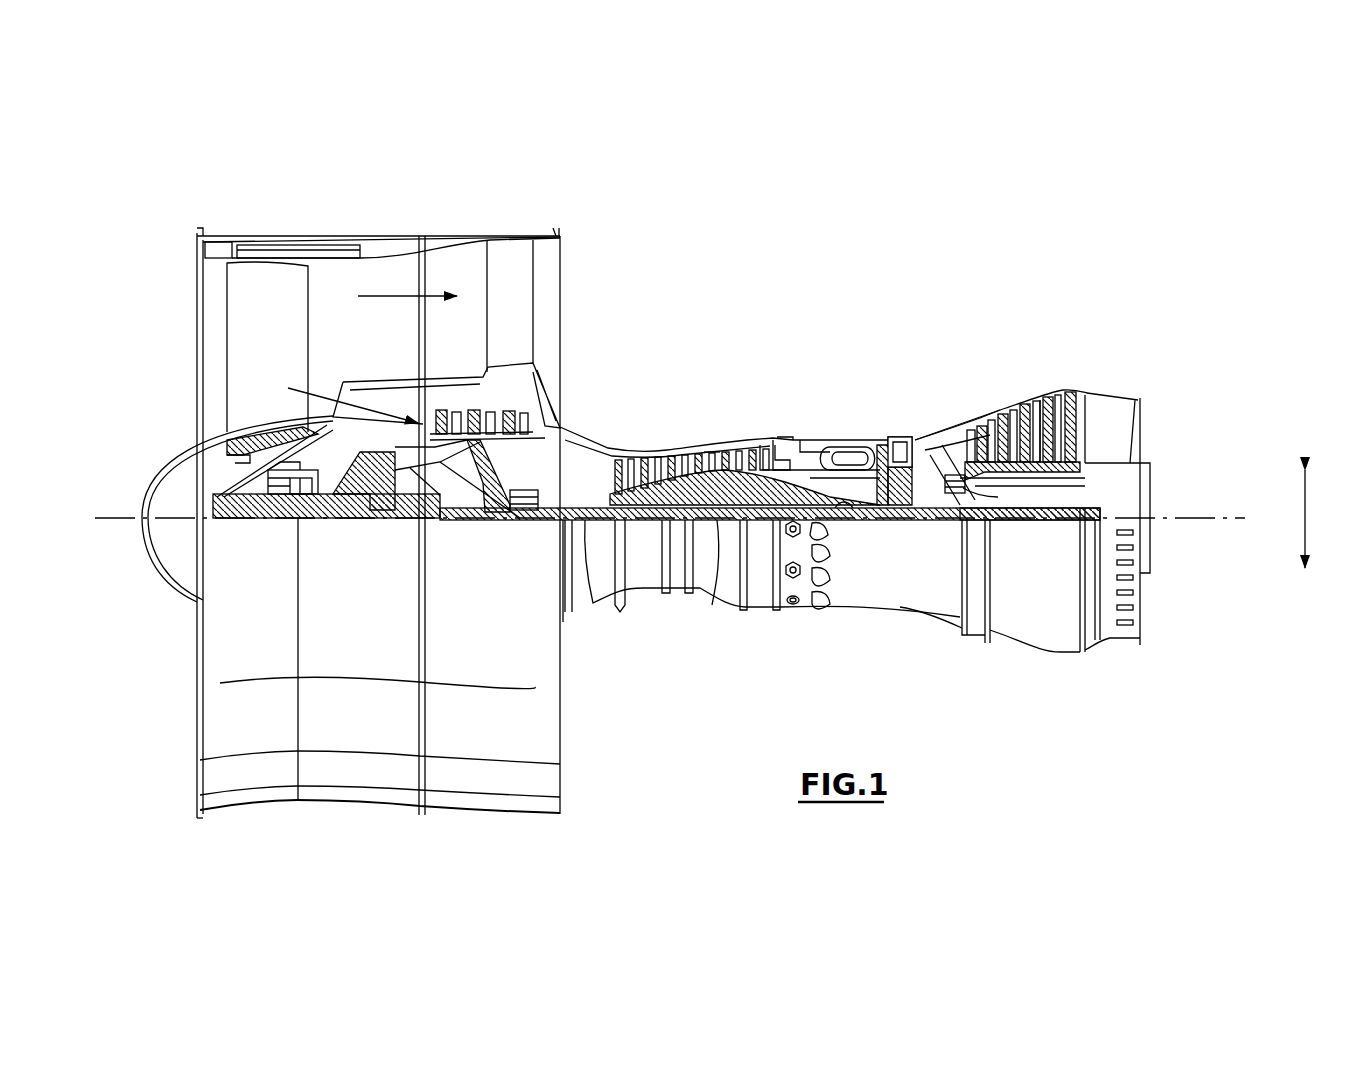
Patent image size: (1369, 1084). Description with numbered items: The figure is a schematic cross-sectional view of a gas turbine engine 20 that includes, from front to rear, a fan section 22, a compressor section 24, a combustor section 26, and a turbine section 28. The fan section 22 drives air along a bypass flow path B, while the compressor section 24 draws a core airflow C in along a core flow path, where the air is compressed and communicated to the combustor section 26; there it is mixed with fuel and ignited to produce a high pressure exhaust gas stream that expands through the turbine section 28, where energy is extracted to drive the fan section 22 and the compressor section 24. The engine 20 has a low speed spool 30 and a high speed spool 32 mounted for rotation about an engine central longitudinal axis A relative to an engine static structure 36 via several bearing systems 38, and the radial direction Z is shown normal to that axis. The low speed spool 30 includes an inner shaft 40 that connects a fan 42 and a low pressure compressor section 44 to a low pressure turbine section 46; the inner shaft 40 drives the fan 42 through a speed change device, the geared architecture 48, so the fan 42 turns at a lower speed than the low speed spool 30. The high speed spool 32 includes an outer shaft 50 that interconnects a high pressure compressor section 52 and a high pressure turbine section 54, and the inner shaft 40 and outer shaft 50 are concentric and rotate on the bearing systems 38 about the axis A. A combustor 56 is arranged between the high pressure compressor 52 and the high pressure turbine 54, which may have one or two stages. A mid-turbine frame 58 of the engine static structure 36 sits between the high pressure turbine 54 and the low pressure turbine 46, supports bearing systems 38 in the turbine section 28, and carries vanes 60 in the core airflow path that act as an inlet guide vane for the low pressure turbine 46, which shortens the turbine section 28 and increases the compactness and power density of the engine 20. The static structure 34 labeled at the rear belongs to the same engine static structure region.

The gas turbine engine 20 is at (843, 285).
The fan section 22 is at (306, 228).
The compressor section 24 is at (607, 430).
The combustor section 26 is at (850, 431).
The turbine section 28 is at (985, 380).
The low speed spool 30 is at (718, 595).
The high speed spool 32 is at (762, 456).
The engine static structure 34 is at (1037, 484).
The engine static structure 36 is at (763, 590).
The bearing systems 38 is at (308, 518).
The inner shaft 40 is at (587, 583).
The fan 42 is at (283, 357).
The low pressure compressor section 44 is at (533, 370).
The low pressure turbine section 46 is at (1025, 408).
The geared architecture 48 is at (385, 500).
The outer shaft 50 is at (843, 507).
The high pressure compressor section 52 is at (708, 452).
The high pressure turbine section 54 is at (897, 437).
The combustor 56 is at (836, 458).
The mid-turbine frame 58 is at (943, 440).
The vanes 60 is at (982, 495).
The engine central longitudinal axis A is at (1232, 518).
The bypass flow path B is at (396, 296).
The core airflow C is at (343, 400).
The radial direction Z is at (1306, 518).